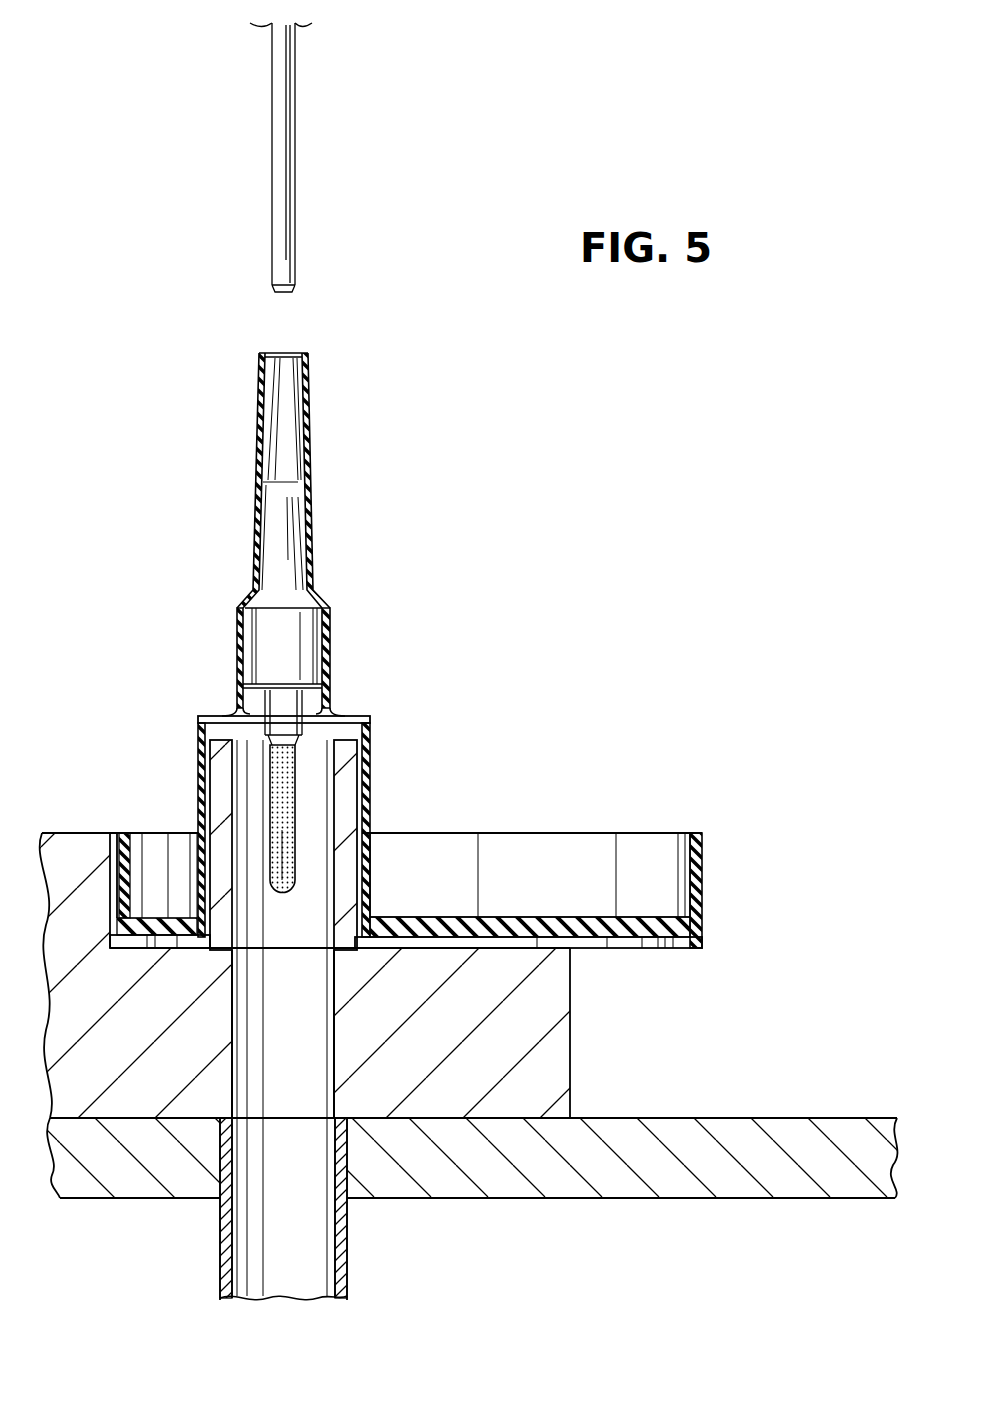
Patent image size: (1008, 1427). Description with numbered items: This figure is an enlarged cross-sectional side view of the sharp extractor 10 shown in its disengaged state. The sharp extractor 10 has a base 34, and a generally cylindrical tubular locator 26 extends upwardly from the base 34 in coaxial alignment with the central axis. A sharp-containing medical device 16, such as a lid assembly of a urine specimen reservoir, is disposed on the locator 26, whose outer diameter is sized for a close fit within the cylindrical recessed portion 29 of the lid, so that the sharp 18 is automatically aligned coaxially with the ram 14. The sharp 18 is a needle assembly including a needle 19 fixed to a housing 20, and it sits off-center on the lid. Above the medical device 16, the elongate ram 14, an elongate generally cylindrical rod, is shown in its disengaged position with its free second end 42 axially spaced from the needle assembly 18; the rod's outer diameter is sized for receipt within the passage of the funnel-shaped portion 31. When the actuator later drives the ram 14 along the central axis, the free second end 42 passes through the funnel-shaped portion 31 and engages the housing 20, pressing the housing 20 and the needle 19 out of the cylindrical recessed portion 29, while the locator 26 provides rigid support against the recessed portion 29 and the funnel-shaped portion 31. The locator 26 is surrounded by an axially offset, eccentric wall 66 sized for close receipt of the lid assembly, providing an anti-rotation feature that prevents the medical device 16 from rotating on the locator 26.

The sharp extractor 10 is at (580, 478).
The ram 14 is at (296, 228).
The medical device 16 is at (541, 833).
The sharp 18 is at (300, 768).
The needle 19 is at (295, 836).
The housing 20 is at (320, 705).
The tubular locator 26 is at (343, 797).
The cylindrical recessed portion 29 is at (198, 773).
The funnel-shaped portion 31 is at (330, 612).
The base 34 is at (572, 988).
The free second end 42 is at (289, 292).
The wall 66 is at (122, 866).